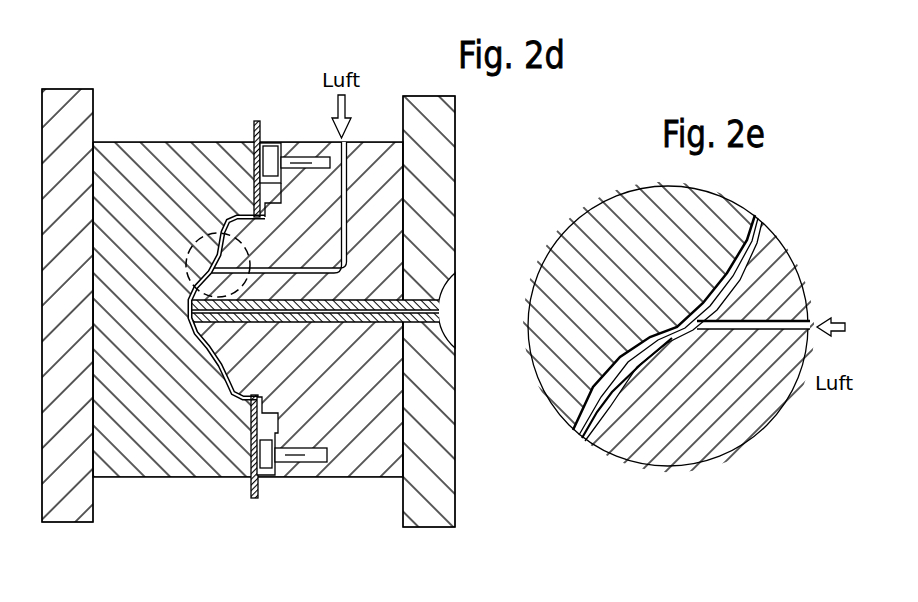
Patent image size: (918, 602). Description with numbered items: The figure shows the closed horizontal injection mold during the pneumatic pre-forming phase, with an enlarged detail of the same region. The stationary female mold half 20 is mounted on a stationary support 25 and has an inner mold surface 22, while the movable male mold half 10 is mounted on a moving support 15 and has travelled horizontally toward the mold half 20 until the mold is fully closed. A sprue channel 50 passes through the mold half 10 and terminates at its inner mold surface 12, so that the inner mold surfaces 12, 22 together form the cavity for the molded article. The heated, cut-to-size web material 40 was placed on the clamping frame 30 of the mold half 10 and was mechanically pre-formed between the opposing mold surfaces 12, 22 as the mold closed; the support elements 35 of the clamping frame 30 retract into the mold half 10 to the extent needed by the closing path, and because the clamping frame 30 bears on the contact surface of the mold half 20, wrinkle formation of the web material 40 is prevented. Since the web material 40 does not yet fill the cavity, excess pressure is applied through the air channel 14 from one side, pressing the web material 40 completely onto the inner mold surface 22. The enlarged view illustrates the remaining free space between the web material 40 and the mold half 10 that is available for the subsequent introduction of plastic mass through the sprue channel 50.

In FIG. 2d, the mold half 10 is at (395, 160).
In FIG. 2e, the mold half 10 is at (668, 433).
In FIG. 2d, the inner mold surface 12 is at (228, 378).
In FIG. 2e, the inner mold surface 12 is at (747, 277).
In FIG. 2d, the air channel 14 is at (347, 245).
In FIG. 2e, the air channel 14 is at (797, 318).
In FIG. 2d, the moving support 15 is at (440, 190).
In FIG. 2d, the mold half 20 is at (130, 170).
In FIG. 2e, the mold half 20 is at (570, 378).
In FIG. 2d, the inner mold surface 22 is at (200, 343).
In FIG. 2e, the inner mold surface 22 is at (657, 325).
In FIG. 2d, the stationary support 25 is at (73, 127).
In FIG. 2d, the clamping frame 30 is at (272, 148).
In FIG. 2d, the support element 35 is at (306, 156).
In FIG. 2d, the web material 40 is at (255, 121).
In FIG. 2e, the web material 40 is at (740, 213).
In FIG. 2d, the sprue channel 50 is at (412, 300).